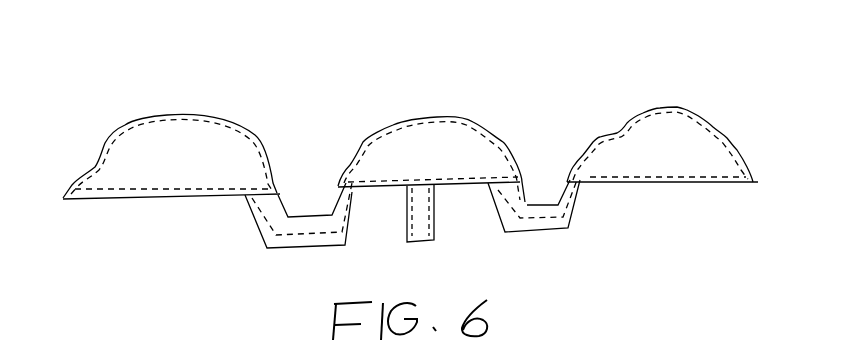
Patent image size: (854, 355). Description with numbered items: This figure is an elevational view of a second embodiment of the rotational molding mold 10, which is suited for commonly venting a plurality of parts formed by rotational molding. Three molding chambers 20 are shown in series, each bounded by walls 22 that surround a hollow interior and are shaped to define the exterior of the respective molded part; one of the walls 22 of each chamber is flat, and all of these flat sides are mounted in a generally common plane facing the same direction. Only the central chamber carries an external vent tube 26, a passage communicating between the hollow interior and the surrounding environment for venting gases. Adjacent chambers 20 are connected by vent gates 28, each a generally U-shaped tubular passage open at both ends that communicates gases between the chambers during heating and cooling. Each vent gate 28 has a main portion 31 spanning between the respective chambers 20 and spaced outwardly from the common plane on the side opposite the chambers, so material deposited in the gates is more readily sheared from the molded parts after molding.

The rotational molding mold 10 is at (335, 80).
The molding chamber 20 is at (453, 106).
The wall 22 is at (177, 120).
The external vent tube 26 is at (435, 238).
The vent gate 28 is at (254, 230).
The main portion 31 is at (312, 227).